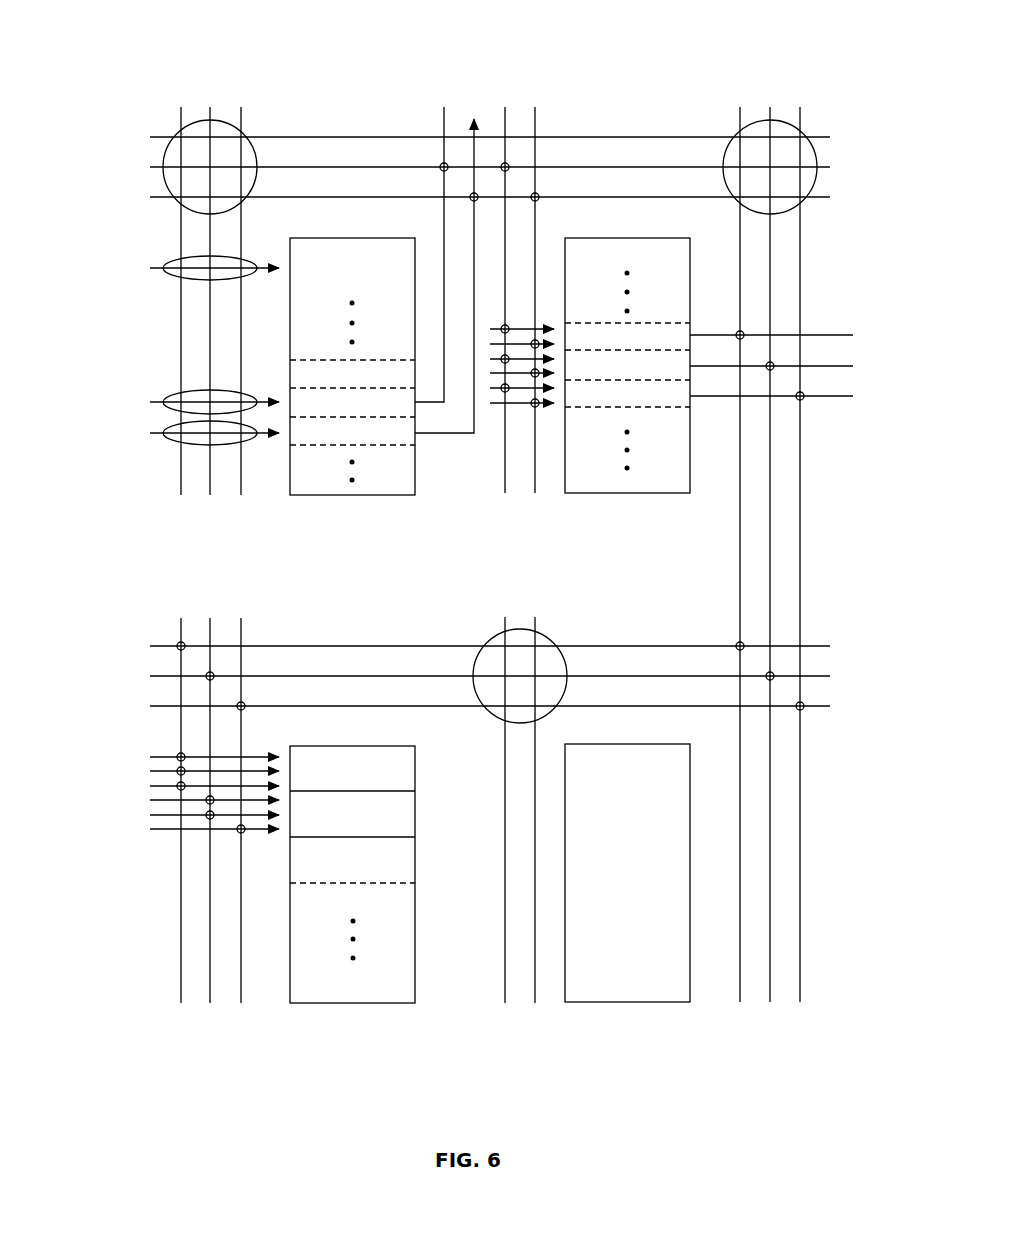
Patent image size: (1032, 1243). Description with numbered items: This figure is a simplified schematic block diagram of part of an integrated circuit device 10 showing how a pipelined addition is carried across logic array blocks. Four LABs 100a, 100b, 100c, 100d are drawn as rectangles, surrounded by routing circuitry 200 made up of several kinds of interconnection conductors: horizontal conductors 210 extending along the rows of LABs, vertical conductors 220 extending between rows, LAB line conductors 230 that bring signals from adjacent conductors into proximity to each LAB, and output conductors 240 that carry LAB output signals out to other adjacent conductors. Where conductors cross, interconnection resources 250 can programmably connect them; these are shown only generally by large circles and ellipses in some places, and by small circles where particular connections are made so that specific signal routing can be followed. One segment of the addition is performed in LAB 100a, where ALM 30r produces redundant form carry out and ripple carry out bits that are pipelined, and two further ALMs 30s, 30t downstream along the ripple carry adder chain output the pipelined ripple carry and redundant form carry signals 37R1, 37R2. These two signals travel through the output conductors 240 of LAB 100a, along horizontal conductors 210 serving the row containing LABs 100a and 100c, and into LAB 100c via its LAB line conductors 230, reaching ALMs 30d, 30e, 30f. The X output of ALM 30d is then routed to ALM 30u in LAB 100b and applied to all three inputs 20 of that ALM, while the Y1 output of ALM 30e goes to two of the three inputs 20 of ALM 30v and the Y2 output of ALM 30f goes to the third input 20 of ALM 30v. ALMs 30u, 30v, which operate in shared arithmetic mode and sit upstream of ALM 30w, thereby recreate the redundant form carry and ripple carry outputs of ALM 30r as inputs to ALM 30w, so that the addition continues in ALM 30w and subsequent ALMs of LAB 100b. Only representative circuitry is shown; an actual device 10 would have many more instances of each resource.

The integrated circuit device 10 is at (156, 34).
The inputs 20 is at (262, 248).
The ALM 30d is at (575, 334).
The ALM 30e is at (672, 357).
The ALM 30f is at (640, 405).
The ALM 30r is at (303, 370).
The ALM 30s is at (355, 405).
The ALM 30t is at (365, 438).
The ALM 30u is at (372, 765).
The ALM 30v is at (405, 823).
The ALM 30w is at (405, 865).
The pipelined ripple carry signal 37R1 is at (440, 232).
The pipelined redundant form carry signal 37R2 is at (440, 436).
The LAB 100a is at (353, 381).
The LAB 100b is at (386, 856).
The LAB 100c is at (709, 351).
The LAB 100d is at (620, 742).
The routing circuitry 200 is at (339, 499).
The horizontal conductors 210 is at (836, 132).
The vertical conductors 220 is at (740, 103).
The LAB line conductors 230 is at (173, 103).
The output conductors 240 is at (420, 279).
The crossing-conductors interconnection resources 250 is at (162, 176).